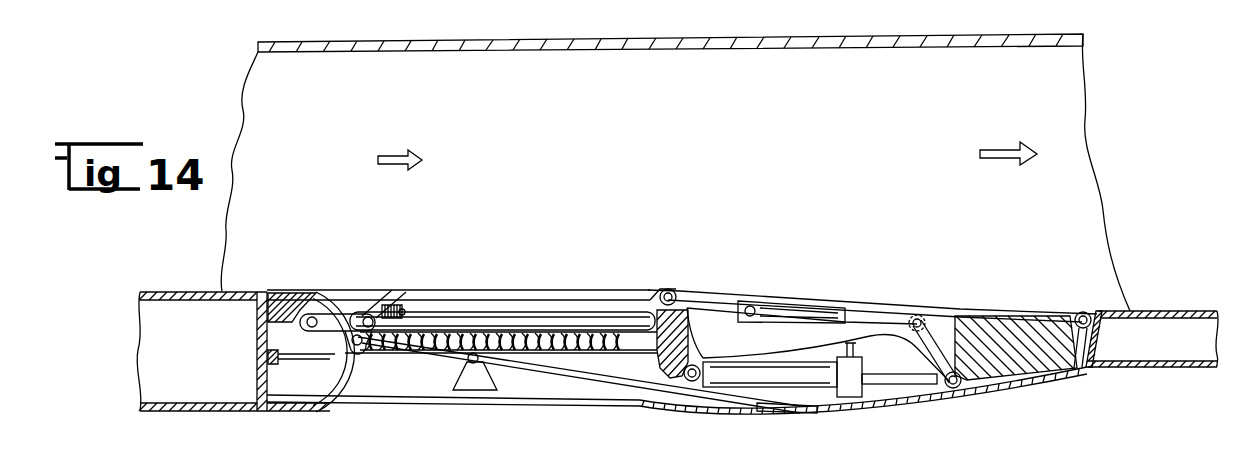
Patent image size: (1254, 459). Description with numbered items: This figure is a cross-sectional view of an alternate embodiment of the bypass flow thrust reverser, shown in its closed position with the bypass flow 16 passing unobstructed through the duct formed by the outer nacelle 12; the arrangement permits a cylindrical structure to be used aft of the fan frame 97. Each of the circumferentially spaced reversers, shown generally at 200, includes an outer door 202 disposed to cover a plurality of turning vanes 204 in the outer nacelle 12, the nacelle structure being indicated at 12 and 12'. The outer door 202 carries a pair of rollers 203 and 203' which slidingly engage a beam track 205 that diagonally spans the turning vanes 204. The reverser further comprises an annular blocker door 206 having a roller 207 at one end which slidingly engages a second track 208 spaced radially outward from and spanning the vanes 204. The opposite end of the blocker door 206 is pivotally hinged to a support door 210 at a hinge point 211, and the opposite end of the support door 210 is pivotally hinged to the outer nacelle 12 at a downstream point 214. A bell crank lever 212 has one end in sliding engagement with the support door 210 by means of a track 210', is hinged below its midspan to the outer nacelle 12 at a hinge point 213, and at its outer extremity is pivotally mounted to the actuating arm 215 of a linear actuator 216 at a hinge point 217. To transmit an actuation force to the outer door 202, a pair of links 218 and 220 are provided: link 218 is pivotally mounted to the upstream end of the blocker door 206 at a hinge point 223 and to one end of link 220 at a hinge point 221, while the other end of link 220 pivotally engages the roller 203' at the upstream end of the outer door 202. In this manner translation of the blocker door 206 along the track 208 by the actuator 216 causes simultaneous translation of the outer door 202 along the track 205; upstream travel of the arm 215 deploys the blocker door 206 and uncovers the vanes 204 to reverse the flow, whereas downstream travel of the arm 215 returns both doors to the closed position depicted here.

The outer nacelle 12 is at (677, 362).
The housing section 12' is at (337, 418).
The duct passage 16 is at (690, 179).
The fan frame 97 is at (288, 293).
The reverser 200 is at (455, 414).
The outer door 202 is at (507, 403).
The roller 203 is at (452, 371).
The roller 203' is at (329, 363).
The turning vanes 204 is at (580, 353).
The beam track 205 is at (592, 402).
The blocker door 206 is at (580, 289).
The roller 207 is at (404, 306).
The second track 208 is at (520, 316).
The support door 210 is at (872, 291).
The track 210' is at (791, 324).
The hinge point 211 is at (676, 290).
The bell crank lever 212 is at (878, 312).
The hinge point 213 is at (933, 314).
The downstream point 214 is at (1088, 310).
The actuating arm 215 is at (897, 373).
The linear actuator 216 is at (790, 380).
The hinge point 217 is at (953, 390).
The link 218 is at (349, 315).
The link 220 is at (337, 348).
The hinge point 221 is at (300, 320).
The hinge point 223 is at (390, 303).